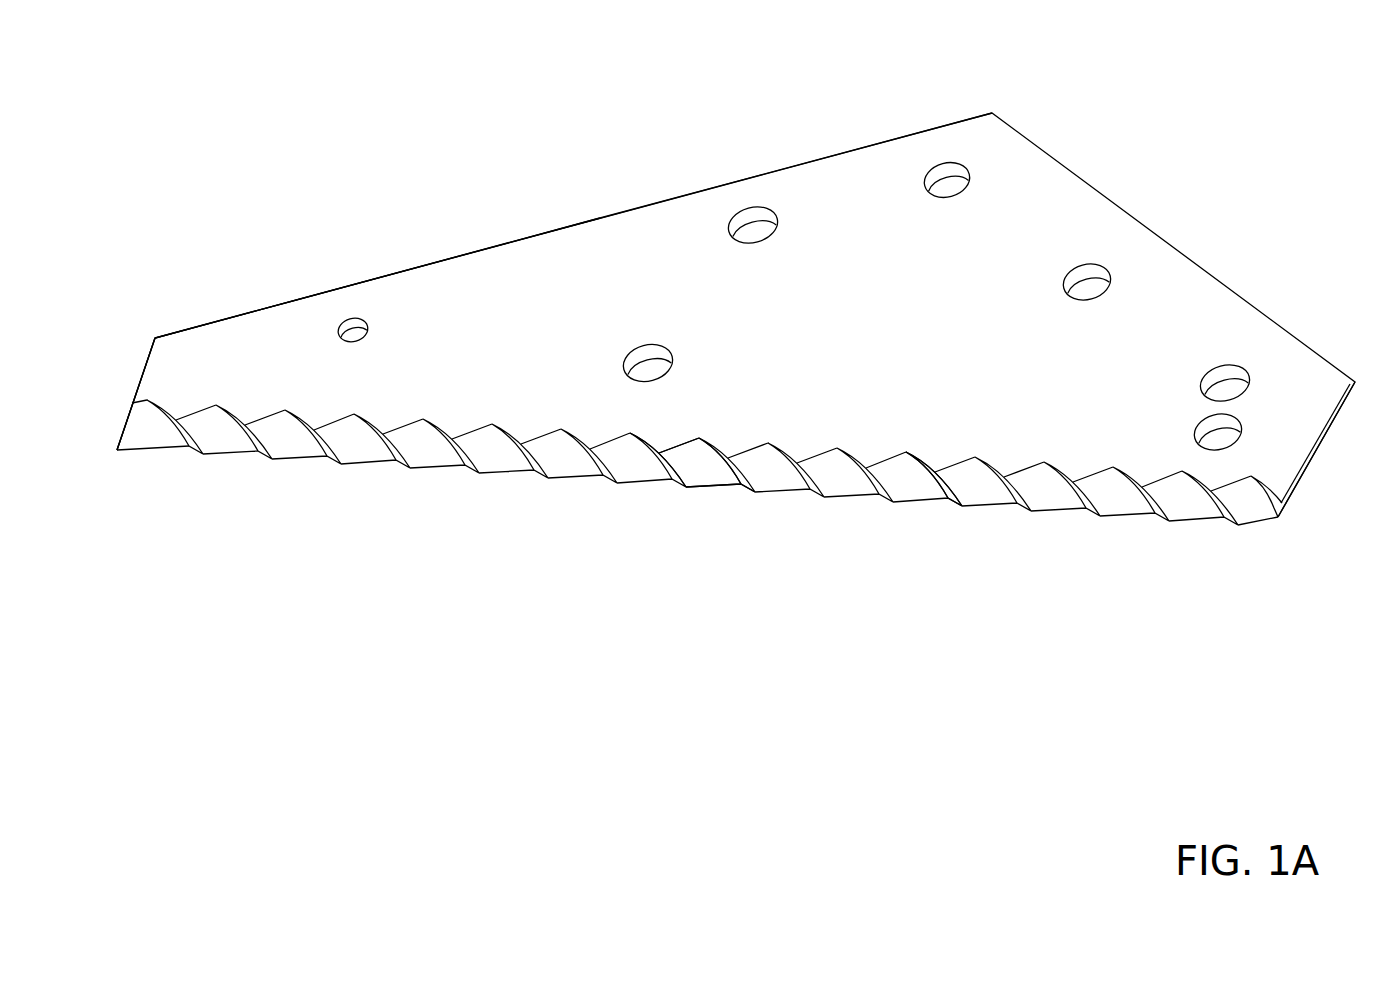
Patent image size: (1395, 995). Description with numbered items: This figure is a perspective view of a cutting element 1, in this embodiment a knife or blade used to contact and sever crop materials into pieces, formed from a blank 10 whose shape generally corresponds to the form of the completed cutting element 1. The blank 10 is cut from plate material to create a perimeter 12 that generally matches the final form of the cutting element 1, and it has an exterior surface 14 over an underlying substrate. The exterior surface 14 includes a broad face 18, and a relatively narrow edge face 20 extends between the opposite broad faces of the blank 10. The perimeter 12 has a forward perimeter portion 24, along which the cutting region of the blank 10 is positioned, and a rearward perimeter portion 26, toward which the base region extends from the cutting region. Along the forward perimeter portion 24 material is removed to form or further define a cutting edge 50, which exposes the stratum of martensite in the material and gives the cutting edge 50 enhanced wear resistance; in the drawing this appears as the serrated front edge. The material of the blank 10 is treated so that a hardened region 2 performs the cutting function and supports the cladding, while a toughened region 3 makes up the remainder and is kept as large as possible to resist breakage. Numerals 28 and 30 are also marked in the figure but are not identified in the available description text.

The cutting element 1 is at (1207, 85).
The blank 10 is at (1030, 108).
The toughened region 3 is at (468, 235).
The exterior surface 14 is at (600, 242).
The rearward perimeter portion 26 is at (785, 172).
The perimeter 12 is at (232, 305).
The face 18 is at (310, 337).
The first side edge 28 is at (142, 375).
The hardened region 2 is at (442, 483).
The forward perimeter portion 24 is at (703, 472).
The cutting edge 50 is at (920, 502).
The edge face 20 is at (1308, 463).
The edge thickness 30 is at (1330, 427).